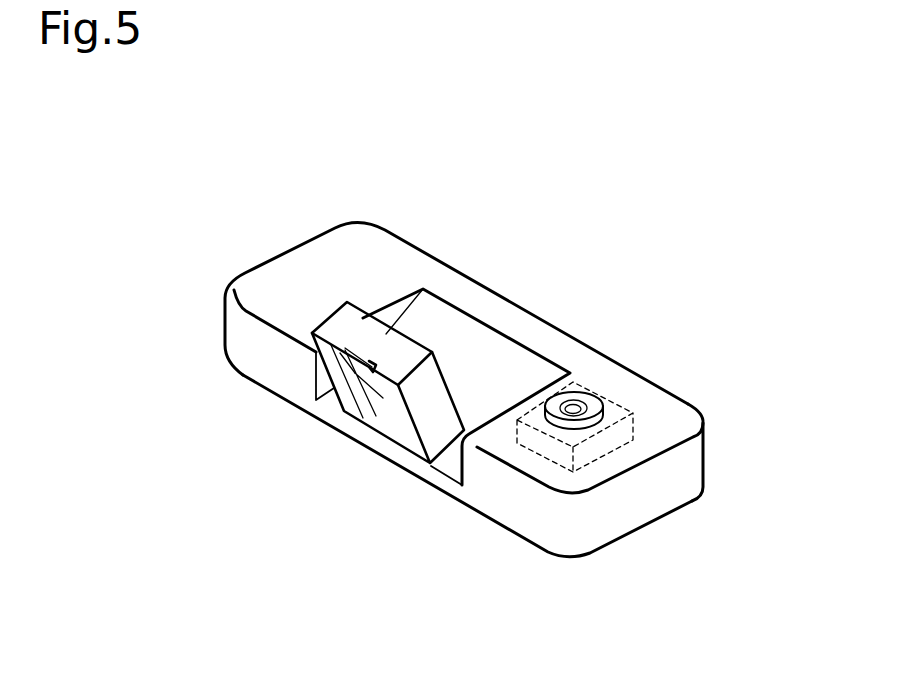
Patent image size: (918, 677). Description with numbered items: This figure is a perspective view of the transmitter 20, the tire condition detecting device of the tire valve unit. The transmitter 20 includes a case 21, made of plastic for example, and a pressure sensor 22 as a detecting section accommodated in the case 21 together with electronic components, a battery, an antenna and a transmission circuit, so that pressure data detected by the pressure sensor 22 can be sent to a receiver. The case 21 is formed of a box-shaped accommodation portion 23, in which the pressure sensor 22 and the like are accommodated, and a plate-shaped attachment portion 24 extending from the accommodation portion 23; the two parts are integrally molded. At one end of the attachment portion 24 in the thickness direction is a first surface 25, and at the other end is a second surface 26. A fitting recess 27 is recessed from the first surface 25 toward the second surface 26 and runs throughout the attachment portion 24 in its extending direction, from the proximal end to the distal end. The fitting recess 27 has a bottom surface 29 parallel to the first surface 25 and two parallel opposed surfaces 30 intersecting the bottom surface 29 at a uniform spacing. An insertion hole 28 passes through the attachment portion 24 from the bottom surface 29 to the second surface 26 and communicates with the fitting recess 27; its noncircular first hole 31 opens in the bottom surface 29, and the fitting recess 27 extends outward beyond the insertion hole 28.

The transmitter 20 is at (365, 221).
The case 21 is at (703, 493).
The pressure sensor 22 is at (621, 410).
The accommodation portion 23 is at (637, 513).
The attachment portion 24 is at (438, 440).
The first surface 25 is at (413, 447).
The second surface 26 is at (447, 369).
The fitting recess 27 is at (367, 366).
The insertion hole 28 is at (333, 410).
The bottom surface 29 is at (386, 335).
The opposed surfaces 30 is at (340, 353).
The first hole 31 is at (367, 400).